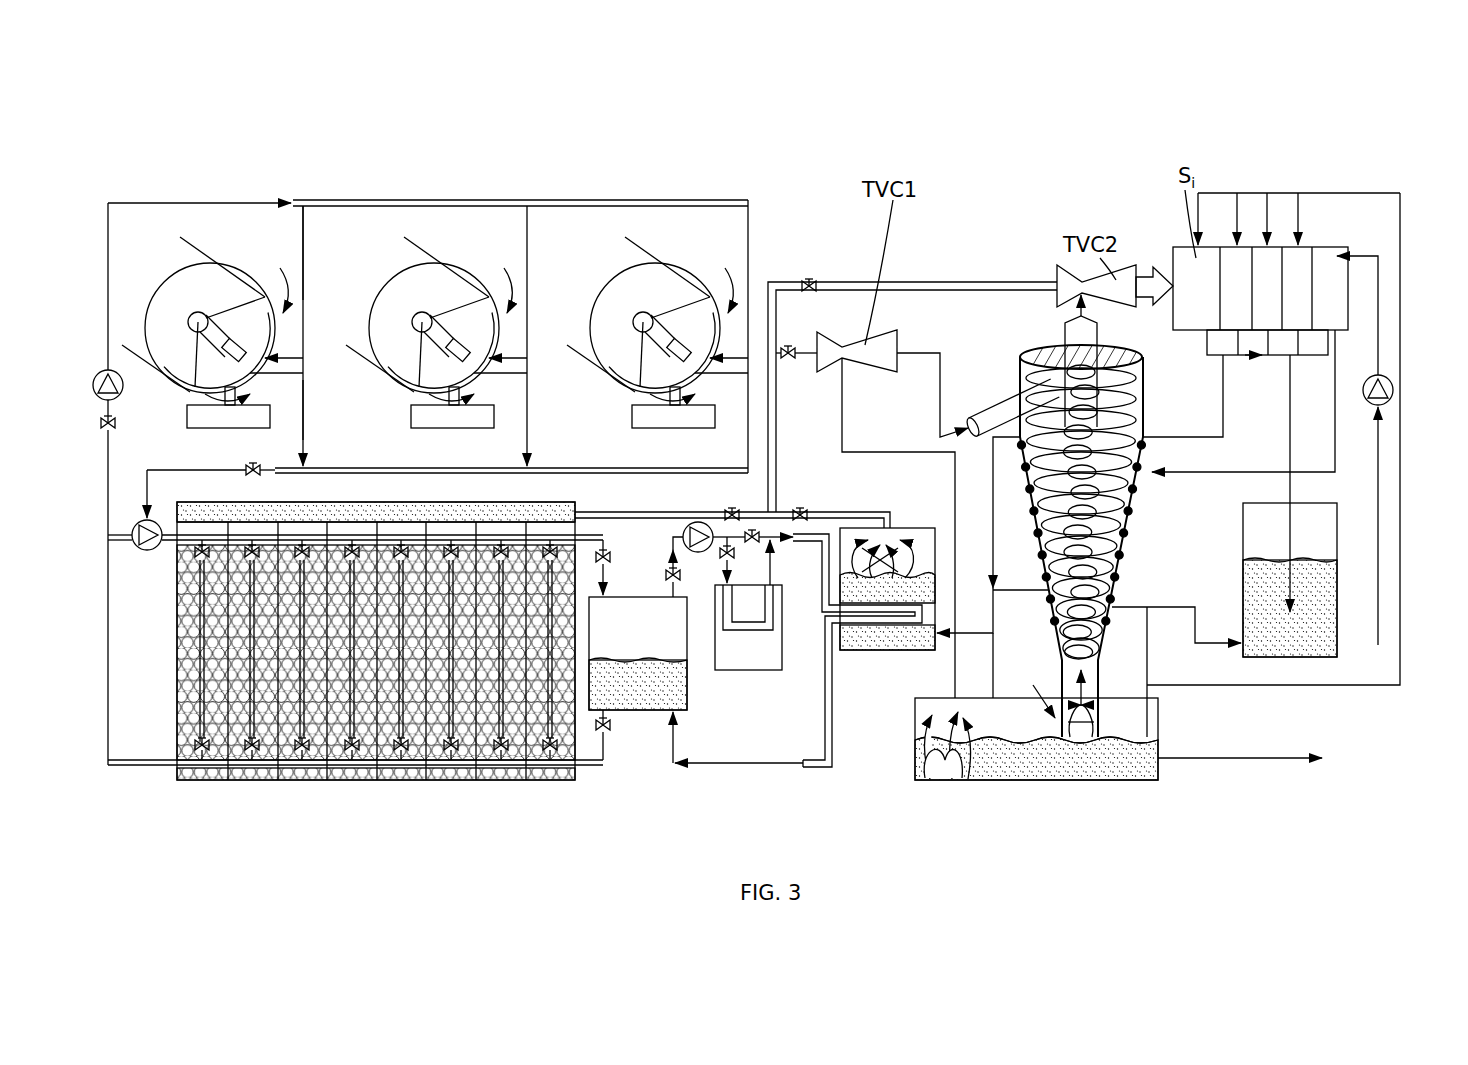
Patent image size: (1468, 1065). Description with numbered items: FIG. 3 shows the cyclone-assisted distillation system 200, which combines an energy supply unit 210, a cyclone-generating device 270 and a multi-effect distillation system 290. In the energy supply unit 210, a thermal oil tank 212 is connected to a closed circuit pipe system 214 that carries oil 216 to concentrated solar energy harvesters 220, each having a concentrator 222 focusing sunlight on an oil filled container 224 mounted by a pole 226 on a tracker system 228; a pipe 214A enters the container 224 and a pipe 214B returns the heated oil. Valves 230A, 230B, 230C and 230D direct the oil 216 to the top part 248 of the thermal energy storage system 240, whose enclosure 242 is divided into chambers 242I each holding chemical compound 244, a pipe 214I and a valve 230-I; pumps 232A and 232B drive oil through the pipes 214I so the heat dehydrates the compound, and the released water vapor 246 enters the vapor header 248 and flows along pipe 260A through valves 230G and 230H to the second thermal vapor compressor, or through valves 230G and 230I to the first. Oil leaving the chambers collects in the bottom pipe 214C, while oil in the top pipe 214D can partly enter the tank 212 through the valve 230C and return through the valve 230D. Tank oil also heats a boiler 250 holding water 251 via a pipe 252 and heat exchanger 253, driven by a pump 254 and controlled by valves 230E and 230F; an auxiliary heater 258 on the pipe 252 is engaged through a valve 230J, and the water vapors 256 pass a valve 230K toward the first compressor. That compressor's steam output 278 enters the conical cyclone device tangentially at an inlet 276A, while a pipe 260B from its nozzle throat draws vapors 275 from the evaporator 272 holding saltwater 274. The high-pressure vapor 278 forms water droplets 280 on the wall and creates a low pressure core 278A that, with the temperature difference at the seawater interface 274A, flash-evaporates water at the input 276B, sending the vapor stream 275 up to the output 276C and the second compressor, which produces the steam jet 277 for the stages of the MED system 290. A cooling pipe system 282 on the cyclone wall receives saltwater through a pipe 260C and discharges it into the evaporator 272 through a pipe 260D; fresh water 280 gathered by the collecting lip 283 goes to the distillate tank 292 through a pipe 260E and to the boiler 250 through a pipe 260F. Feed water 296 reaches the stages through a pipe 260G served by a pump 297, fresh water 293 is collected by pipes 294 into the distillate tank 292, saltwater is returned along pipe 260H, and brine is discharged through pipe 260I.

The cyclone-assisted distillation system 200 is at (1200, 115).
The energy supply unit 210 is at (437, 185).
The thermal oil tank 212 is at (660, 639).
The closed circuit pipe system 214 is at (108, 790).
The pipe 214A is at (305, 262).
The pipe 214B is at (305, 405).
The bottom pipe 214C is at (135, 768).
The top pipe 214D is at (582, 512).
The pipe 214I is at (362, 748).
The oil 216 is at (662, 712).
The concentrated solar energy harvester 220 is at (233, 336).
The concentrator 222 is at (180, 295).
The oil filled container 224 is at (233, 340).
The pole 226 is at (250, 406).
The tracker system 228 is at (257, 393).
The valve 230A is at (115, 423).
The valve 230B is at (250, 478).
The valve 230C is at (606, 548).
The valve 230D is at (612, 735).
The valve 230E is at (668, 568).
The valve 230F is at (752, 545).
The valve 230G is at (732, 508).
The valve 230H is at (809, 280).
The valve 230I is at (790, 345).
The valve 230J is at (735, 548).
The valve 230K is at (808, 510).
The valve 230-I is at (195, 556).
The pump 232A is at (108, 370).
The pump 232B is at (127, 522).
The thermal energy storage system 240 is at (344, 668).
The enclosure 242 is at (492, 782).
The chamber 242I is at (300, 777).
The chemical compound 244 is at (182, 672).
The water vapor 246 is at (497, 515).
The vapor header 248 is at (432, 503).
The boiler 250 is at (891, 603).
The water 251 is at (887, 589).
The pipe 252 is at (818, 770).
The heat exchanger 253 is at (900, 645).
The pump 254 is at (697, 553).
The water vapors 256 is at (898, 545).
The auxiliary heater 258 is at (735, 672).
The pipe 260A is at (940, 282).
The pipe 260B is at (842, 400).
The pipe 260C is at (1288, 415).
The pipe 260D is at (1150, 630).
The pipe 260E is at (1172, 607).
The pipe 260F is at (958, 636).
The pipe 260G is at (1383, 268).
The pipe 260H is at (1400, 690).
The pipe 260I is at (1245, 760).
The cyclone-generating device 270 is at (1082, 215).
The evaporator 272 is at (1068, 770).
The saltwater 274 is at (1095, 767).
The seawater interface 274A is at (1030, 770).
The water vapor stream 275 is at (1040, 680).
The inlet 276A is at (990, 412).
The input 276B is at (1100, 725).
The output 276C is at (1062, 330).
The steam jet 277 is at (1172, 270).
The steam output 278 is at (940, 353).
The low pressure core 278A is at (1138, 500).
The water droplets 280 is at (1152, 440).
The cooling pipe system 282 is at (1130, 525).
The collecting device 283 is at (1112, 620).
The multi-effect distillation system 290 is at (1315, 160).
The distillate tank 292 is at (1294, 598).
The fresh water 293 is at (1310, 562).
The pipes 294 is at (1262, 358).
The feed water 296 is at (1378, 340).
The pump 297 is at (1394, 390).